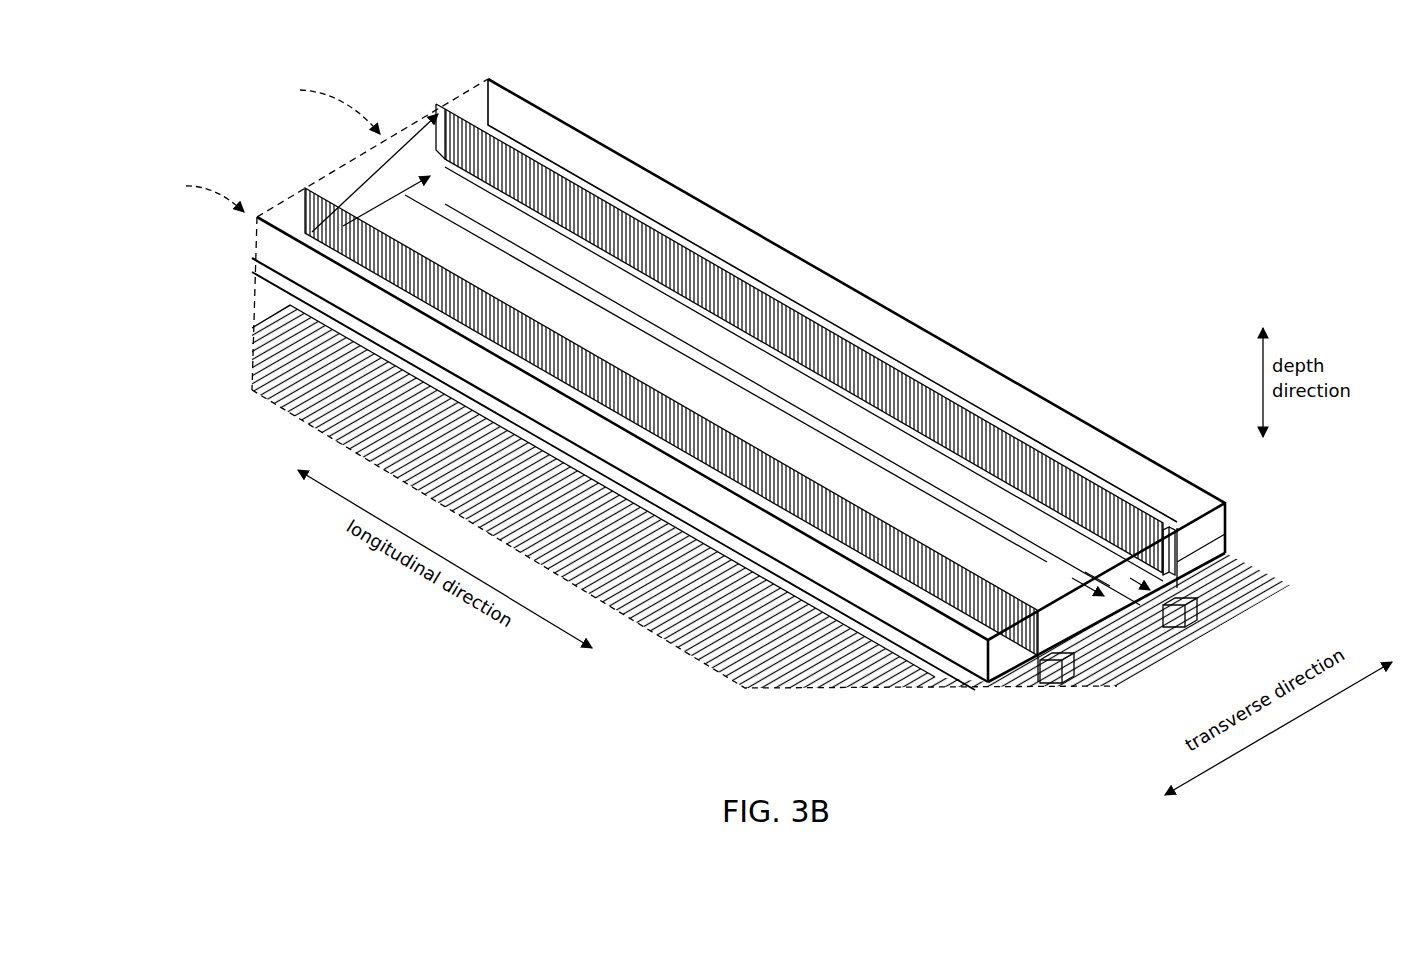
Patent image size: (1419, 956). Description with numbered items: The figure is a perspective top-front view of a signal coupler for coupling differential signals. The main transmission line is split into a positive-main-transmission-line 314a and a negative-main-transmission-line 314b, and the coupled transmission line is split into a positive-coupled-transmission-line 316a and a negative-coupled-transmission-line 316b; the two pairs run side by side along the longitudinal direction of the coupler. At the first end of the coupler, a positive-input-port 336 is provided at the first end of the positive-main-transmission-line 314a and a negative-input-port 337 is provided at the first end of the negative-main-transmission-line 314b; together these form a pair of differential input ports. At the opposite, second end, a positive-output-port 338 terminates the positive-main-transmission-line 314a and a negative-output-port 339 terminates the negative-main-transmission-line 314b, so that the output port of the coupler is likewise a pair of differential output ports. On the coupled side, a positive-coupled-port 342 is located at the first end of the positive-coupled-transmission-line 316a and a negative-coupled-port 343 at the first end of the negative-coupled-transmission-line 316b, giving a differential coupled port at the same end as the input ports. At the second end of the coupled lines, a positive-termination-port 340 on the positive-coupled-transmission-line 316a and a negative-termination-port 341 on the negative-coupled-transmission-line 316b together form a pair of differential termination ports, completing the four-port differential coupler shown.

The positive-main-transmission-line 314a is at (290, 259).
The negative-main-transmission-line 314b is at (1128, 447).
The positive-coupled-transmission-line 316a is at (1037, 655).
The negative-coupled-transmission-line 316b is at (1165, 628).
The positive-input-port 336 is at (290, 212).
The negative-input-port 337 is at (436, 112).
The positive-output-port 338 is at (1048, 615).
The negative-output-port 339 is at (1180, 530).
The positive-termination-port 340 is at (1070, 655).
The negative-termination-port 341 is at (1198, 594).
The positive-coupled-port 342 is at (191, 193).
The negative-coupled-port 343 is at (313, 106).